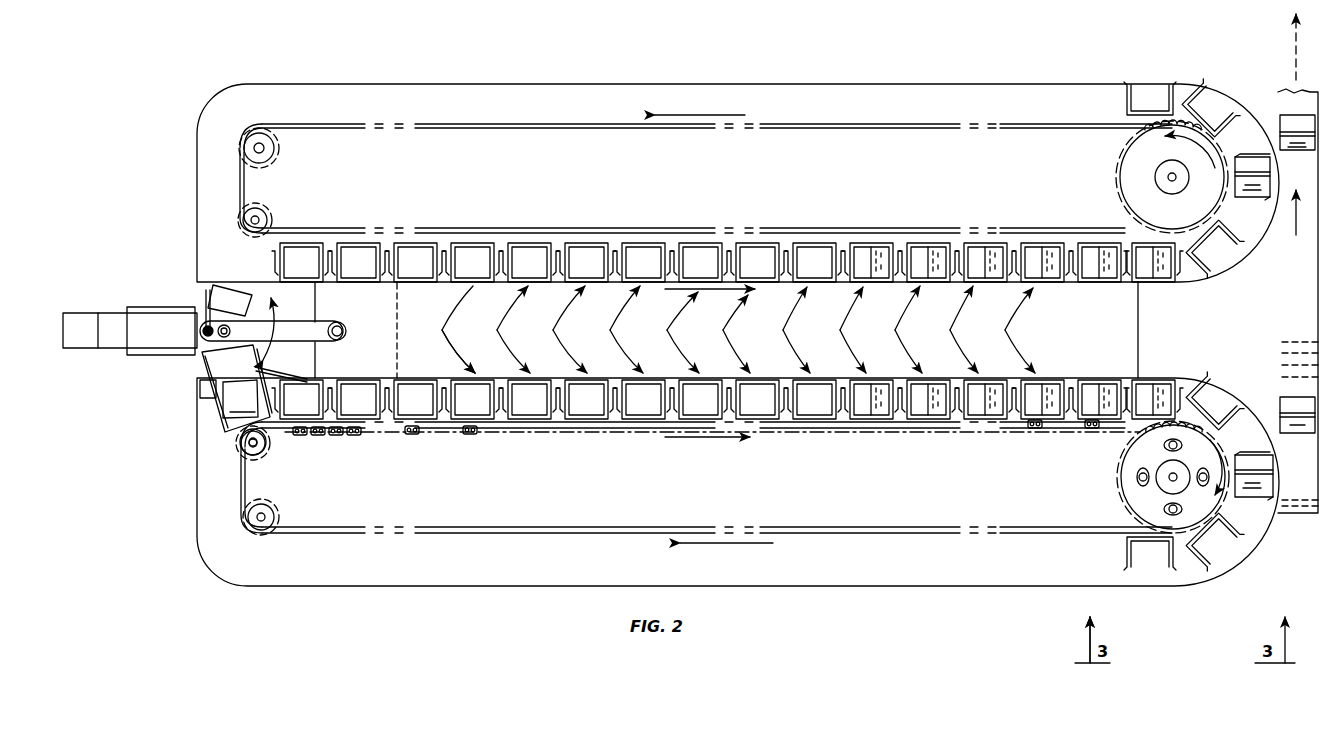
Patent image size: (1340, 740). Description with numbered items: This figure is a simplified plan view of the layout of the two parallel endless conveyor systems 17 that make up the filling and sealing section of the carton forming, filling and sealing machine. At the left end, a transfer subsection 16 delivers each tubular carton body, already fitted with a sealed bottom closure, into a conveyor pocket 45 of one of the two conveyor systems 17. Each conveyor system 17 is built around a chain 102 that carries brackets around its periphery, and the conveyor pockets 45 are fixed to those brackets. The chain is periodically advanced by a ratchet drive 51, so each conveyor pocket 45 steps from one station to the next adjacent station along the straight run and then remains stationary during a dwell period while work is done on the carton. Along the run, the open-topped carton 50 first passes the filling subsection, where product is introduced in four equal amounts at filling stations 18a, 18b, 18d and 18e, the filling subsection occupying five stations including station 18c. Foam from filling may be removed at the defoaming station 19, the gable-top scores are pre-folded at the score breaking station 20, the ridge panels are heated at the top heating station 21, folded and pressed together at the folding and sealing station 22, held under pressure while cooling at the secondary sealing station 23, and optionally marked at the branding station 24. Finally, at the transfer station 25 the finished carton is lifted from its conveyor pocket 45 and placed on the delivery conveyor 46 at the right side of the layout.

The transfer subsection 16 is at (190, 368).
The endless conveyor system 17 is at (373, 84).
The filling station 18a is at (435, 329).
The filling station 18b is at (491, 329).
The filling station 18c is at (548, 329).
The filling station 18d is at (605, 329).
The filling station 18e is at (661, 332).
The defoaming station 19 is at (710, 363).
The score breaking station 20 is at (781, 330).
The top heating station 21 is at (839, 330).
The folding and sealing station 22 is at (893, 329).
The secondary sealing station 23 is at (949, 329).
The branding station 24 is at (1006, 330).
The transfer station 25 is at (1249, 137).
The conveyor pocket 45 is at (1128, 97).
The delivery conveyor 46 is at (1280, 307).
The open-topped carton 50 is at (305, 283).
The ratchet drive 51 is at (1110, 156).
The chain 102 is at (418, 133).